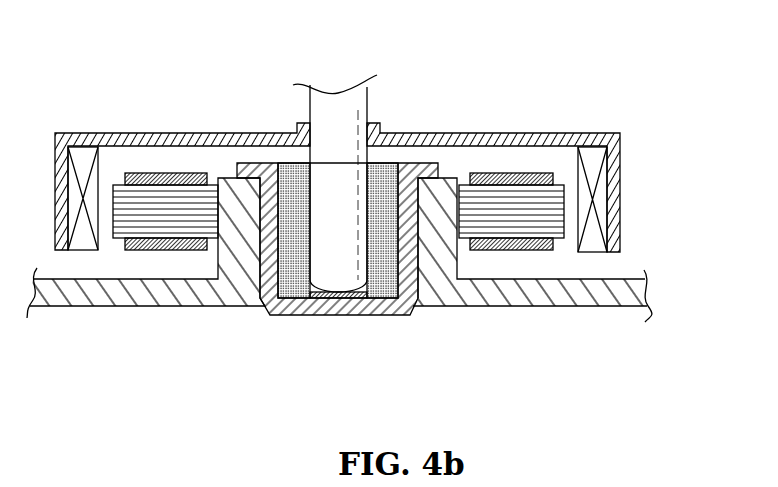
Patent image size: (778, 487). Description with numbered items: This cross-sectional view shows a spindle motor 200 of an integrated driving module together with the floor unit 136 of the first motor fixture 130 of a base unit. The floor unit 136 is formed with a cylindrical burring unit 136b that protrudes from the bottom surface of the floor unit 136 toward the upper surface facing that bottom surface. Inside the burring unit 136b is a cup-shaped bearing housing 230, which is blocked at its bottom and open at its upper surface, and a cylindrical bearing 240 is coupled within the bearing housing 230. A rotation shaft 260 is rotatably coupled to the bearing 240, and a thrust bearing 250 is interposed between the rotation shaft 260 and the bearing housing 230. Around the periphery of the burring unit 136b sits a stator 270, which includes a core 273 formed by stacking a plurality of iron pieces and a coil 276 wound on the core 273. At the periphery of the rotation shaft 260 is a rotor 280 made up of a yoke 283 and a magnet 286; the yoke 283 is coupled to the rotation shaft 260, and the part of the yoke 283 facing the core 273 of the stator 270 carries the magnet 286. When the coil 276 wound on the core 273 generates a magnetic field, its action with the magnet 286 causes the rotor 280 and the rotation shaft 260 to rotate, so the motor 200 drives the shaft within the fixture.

The first motor fixture 130 is at (344, 285).
The floor unit 136 is at (555, 318).
The burring unit 136b is at (242, 248).
The motor 200 is at (408, 210).
The bearing housing 230 is at (358, 295).
The bearing 240 is at (391, 292).
The thrust bearing 250 is at (325, 298).
The rotation shaft 260 is at (320, 110).
The stator 270 is at (364, 148).
The core 273 is at (538, 203).
The coil 276 is at (517, 177).
The rotor 280 is at (408, 175).
The yoke 283 is at (612, 138).
The magnet 286 is at (600, 192).